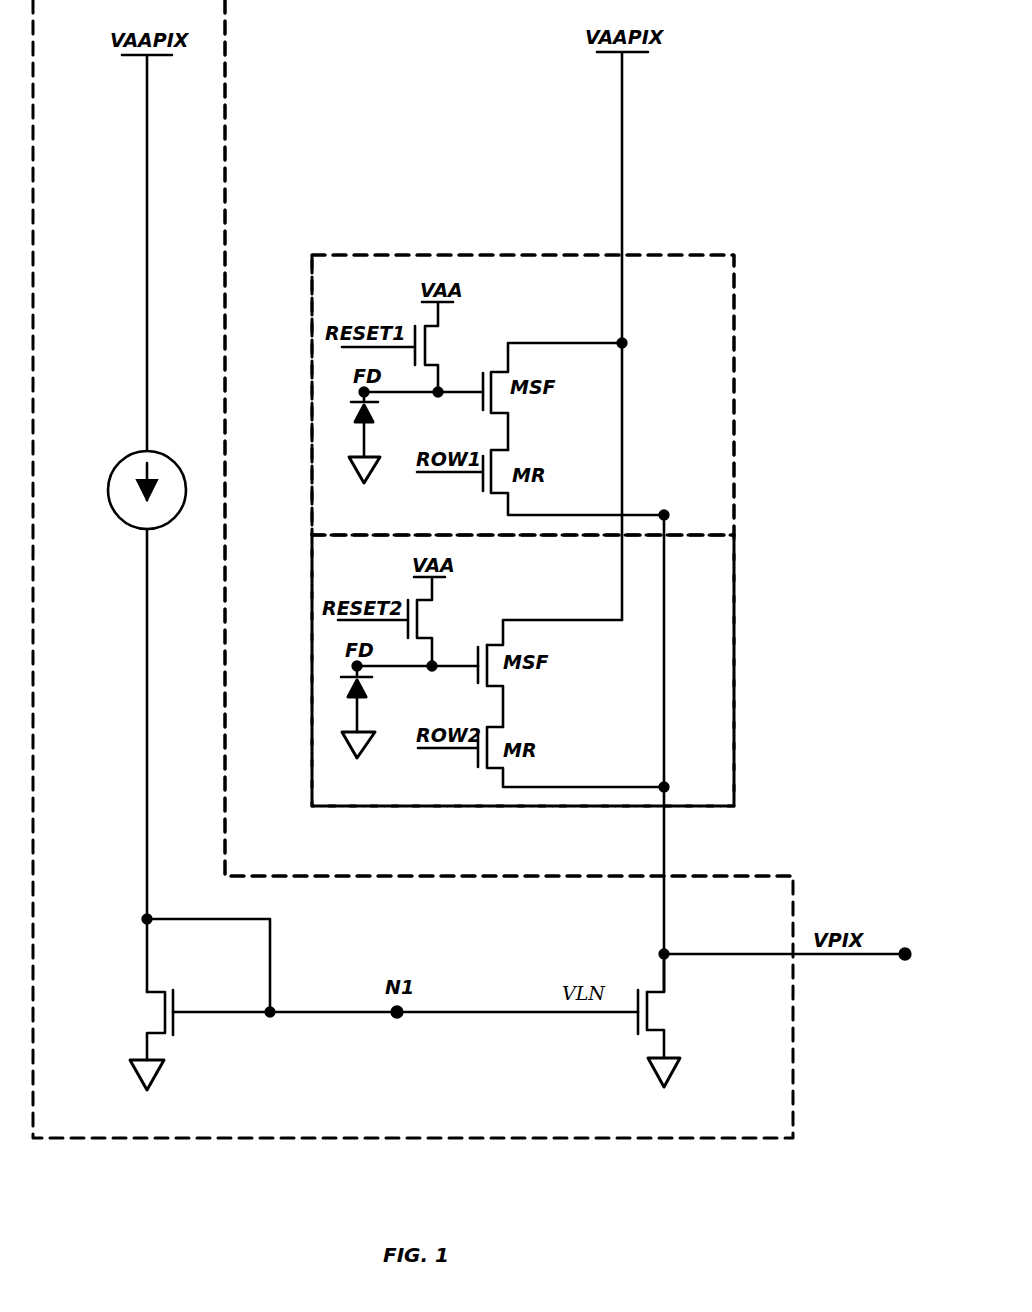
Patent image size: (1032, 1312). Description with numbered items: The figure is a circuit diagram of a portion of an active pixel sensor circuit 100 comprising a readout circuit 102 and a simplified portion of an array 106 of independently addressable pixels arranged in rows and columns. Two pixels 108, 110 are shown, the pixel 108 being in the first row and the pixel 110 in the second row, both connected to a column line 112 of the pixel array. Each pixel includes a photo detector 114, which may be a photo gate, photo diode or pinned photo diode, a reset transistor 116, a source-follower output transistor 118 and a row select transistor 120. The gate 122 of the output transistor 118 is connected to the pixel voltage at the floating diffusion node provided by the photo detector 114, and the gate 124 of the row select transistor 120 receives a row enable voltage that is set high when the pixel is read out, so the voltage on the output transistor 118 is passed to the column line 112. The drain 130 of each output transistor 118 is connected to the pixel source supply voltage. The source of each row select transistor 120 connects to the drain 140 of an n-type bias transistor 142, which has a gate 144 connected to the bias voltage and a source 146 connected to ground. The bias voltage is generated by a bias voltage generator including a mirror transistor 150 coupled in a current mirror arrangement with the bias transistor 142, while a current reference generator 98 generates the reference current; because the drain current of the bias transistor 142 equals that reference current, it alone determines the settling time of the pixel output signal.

The current reference generator 98 is at (118, 458).
The APS circuit 100 is at (835, 192).
The readout circuit 102 is at (228, 102).
The array 106 is at (755, 445).
The pixel 108 is at (310, 283).
The pixel 110 is at (310, 600).
The column line 112 is at (666, 852).
The photo detector 114 is at (367, 432).
The reset transistor 116 is at (452, 330).
The source-follower output transistor MSF 118 is at (524, 411).
The row select transistor MR 120 is at (515, 458).
The gate of the output transistor MSF 122 is at (481, 402).
The gate of the row select transistor MR 124 is at (480, 482).
The drain of the output transistor MSF 130 is at (506, 346).
The drain of bias transistor M5 140 is at (667, 985).
The bias transistor M5 142 is at (673, 1020).
The gate of bias transistor M5 144 is at (600, 1025).
The source of bias transistor M5 146 is at (667, 1043).
The transistor M2 150 is at (133, 991).